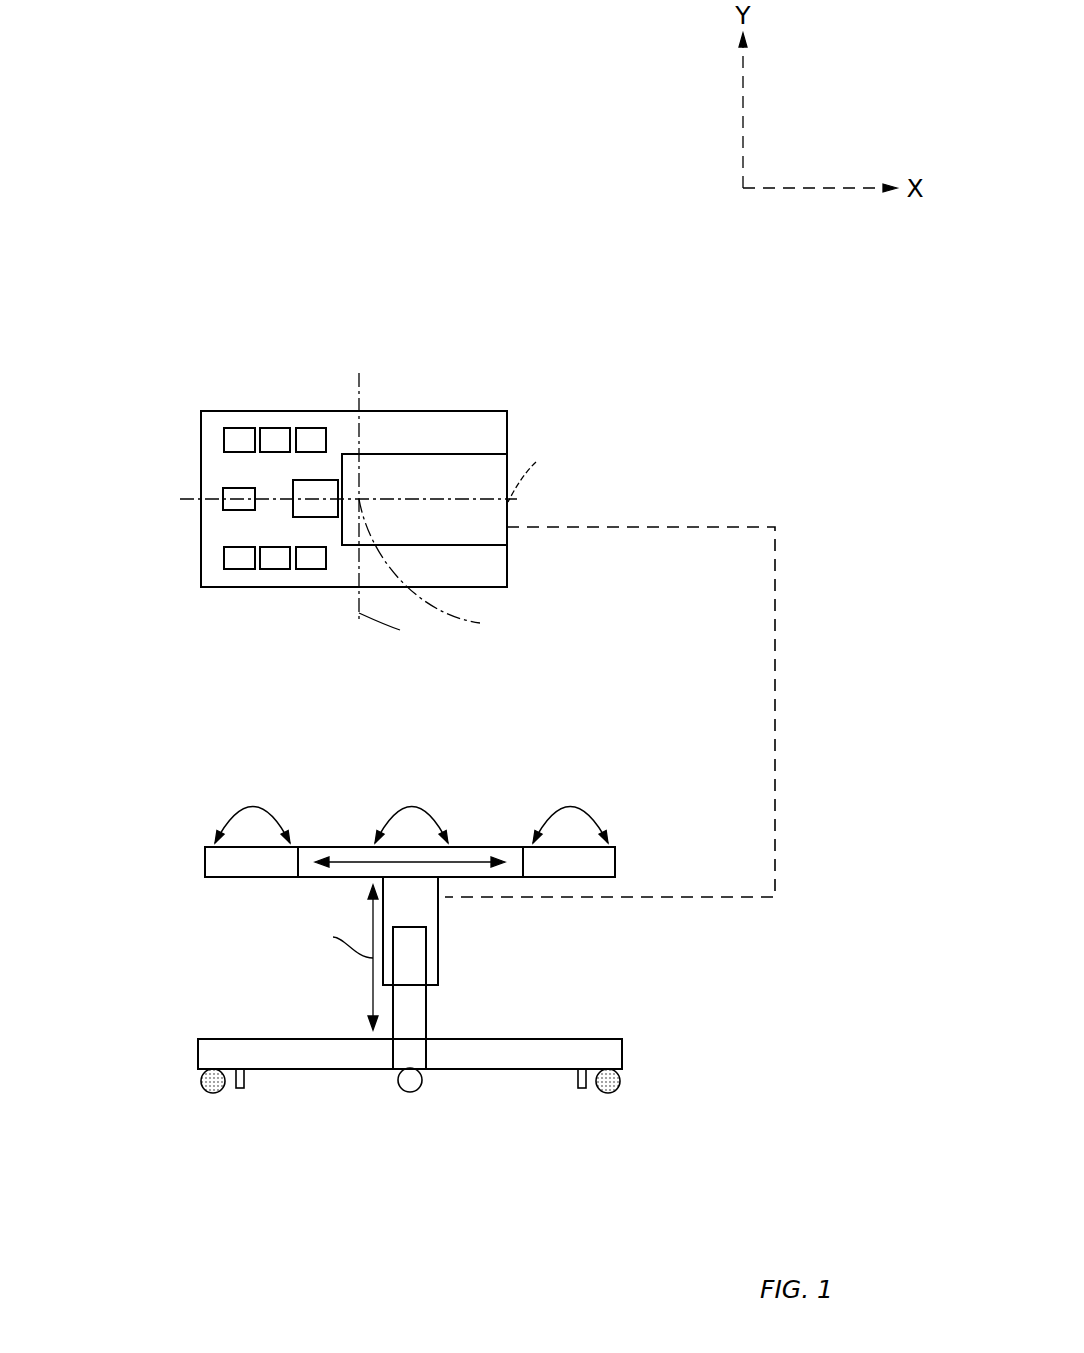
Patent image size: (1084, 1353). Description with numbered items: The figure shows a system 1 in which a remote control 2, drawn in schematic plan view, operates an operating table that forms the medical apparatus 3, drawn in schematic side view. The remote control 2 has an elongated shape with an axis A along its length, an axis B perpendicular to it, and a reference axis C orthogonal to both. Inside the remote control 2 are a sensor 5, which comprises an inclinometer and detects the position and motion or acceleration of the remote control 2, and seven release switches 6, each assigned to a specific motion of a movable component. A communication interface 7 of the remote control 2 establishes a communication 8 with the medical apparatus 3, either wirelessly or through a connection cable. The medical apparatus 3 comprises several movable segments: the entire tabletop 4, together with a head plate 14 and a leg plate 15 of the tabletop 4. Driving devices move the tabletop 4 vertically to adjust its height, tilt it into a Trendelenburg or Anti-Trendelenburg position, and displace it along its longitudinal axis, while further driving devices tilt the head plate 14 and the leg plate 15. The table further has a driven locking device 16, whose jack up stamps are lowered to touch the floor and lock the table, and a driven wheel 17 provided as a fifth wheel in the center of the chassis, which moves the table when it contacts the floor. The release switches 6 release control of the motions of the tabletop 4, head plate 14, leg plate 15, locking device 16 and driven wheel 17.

The system 1 is at (470, 300).
The remote control 2 is at (312, 378).
The medical apparatus 3 is at (160, 1131).
The tabletop 4 is at (173, 889).
The sensor 5 is at (325, 480).
The release switches 6 is at (240, 488).
The communication interface 7 is at (440, 454).
The communication 8 is at (777, 580).
The head plate 14 is at (205, 862).
The leg plate 15 is at (615, 862).
The driven locking device 16 is at (244, 1078).
The driven wheel 17 is at (408, 1092).